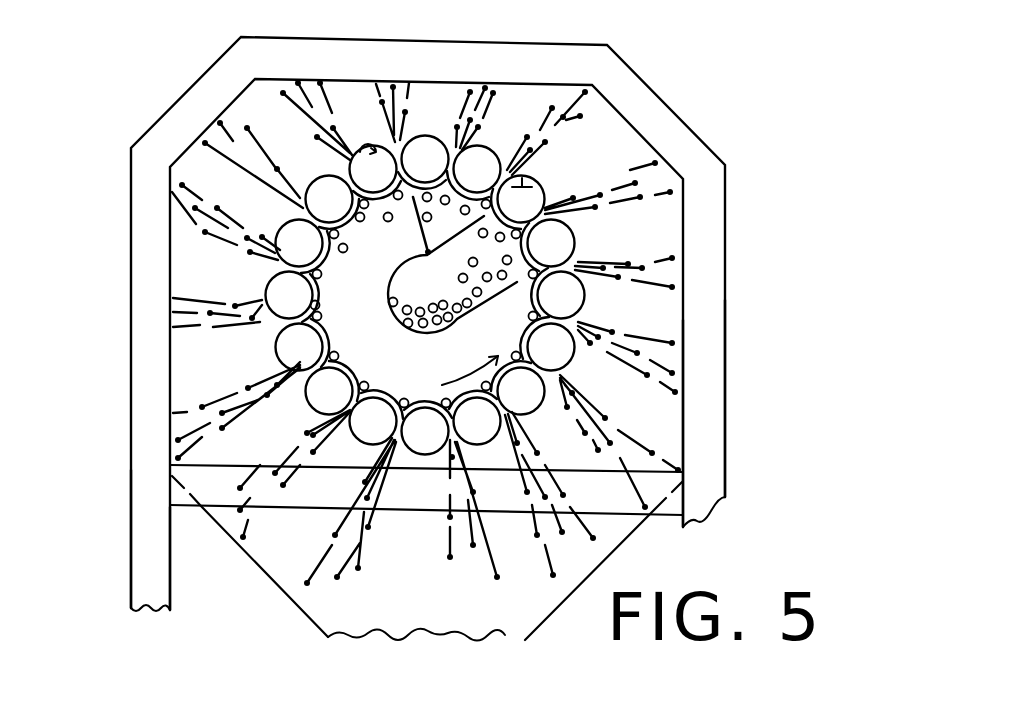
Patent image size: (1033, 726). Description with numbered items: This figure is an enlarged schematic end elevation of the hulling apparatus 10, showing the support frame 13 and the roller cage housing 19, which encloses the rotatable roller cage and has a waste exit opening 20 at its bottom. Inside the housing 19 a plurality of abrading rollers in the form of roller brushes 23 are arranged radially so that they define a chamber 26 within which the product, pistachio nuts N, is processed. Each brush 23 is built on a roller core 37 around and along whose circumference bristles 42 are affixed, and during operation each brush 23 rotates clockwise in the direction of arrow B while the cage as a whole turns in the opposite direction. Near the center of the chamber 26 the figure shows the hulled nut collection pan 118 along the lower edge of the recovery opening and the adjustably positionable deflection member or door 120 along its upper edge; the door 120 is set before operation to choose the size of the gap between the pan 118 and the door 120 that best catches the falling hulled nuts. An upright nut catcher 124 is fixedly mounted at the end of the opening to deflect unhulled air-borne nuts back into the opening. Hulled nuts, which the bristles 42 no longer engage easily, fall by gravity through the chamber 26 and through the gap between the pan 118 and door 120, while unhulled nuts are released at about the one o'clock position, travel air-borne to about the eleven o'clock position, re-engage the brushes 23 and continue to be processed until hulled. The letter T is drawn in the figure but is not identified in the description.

The apparatus 10 is at (660, 78).
The roller cage housing 19 is at (683, 210).
The support frame 13 is at (725, 315).
The roller brushes 23 is at (540, 176).
The roller core 37 is at (528, 176).
The bristles 42 is at (542, 198).
The chamber 26 is at (425, 299).
The deflection member or door 120 is at (451, 250).
The nut catcher 124 is at (414, 237).
The hulled nut collection pan 118 is at (493, 305).
The waste exit opening 20 is at (401, 618).
The arrow B is at (360, 148).
The top reference T is at (442, 126).
The pistachio nuts N is at (324, 298).